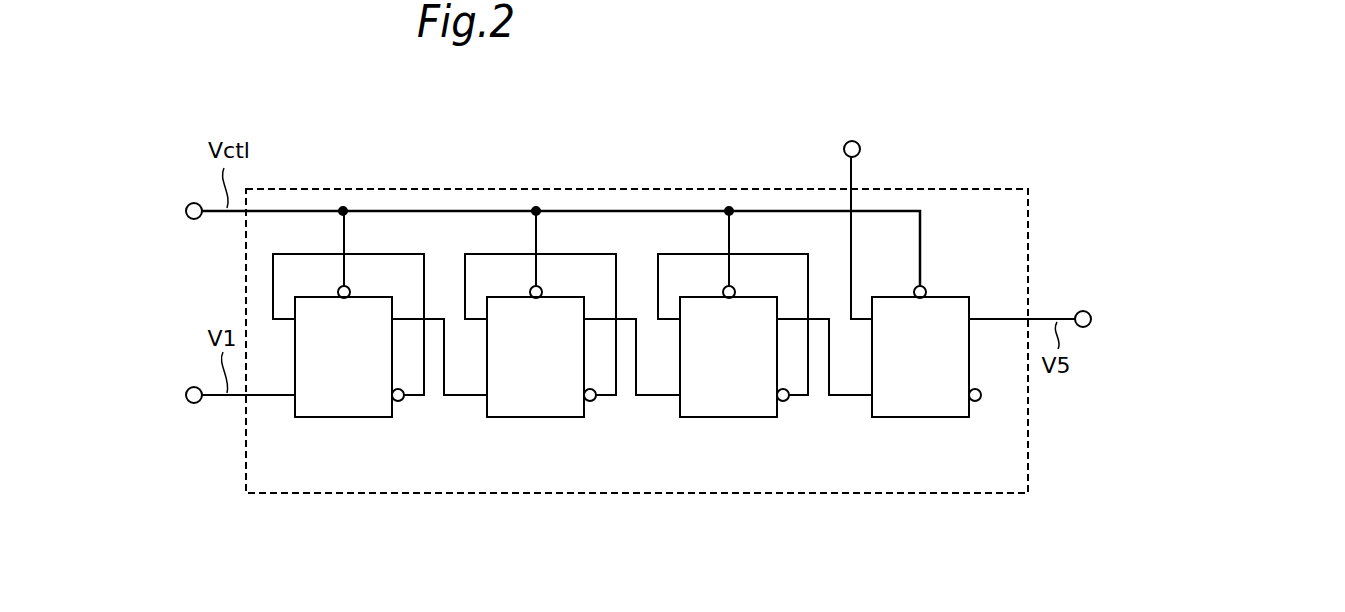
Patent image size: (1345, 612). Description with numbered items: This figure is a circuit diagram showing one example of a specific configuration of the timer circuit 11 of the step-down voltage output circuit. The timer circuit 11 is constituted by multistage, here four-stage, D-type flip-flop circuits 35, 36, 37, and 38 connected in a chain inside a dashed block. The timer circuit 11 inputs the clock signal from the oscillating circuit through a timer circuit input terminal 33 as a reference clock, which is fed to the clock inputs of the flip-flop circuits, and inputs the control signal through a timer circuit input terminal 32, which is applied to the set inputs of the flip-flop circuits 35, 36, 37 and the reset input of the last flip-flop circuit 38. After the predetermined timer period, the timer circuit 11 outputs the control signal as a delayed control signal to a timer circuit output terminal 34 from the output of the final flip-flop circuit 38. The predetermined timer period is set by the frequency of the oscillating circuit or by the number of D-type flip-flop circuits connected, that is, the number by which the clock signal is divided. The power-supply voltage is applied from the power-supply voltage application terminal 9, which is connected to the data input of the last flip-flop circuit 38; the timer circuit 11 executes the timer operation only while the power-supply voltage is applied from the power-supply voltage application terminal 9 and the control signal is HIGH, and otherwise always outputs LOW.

The timer circuit 11 is at (817, 494).
The timer circuit input terminal 32 is at (186, 211).
The timer circuit input terminal 33 is at (186, 395).
The timer circuit output terminal 34 is at (1091, 319).
The D-type flip-flop circuit 35 is at (344, 418).
The D-type flip-flop circuit 36 is at (536, 418).
The D-type flip-flop circuit 37 is at (729, 418).
The D-type flip-flop circuit 38 is at (920, 418).
The power-supply voltage application terminal 9 is at (853, 139).